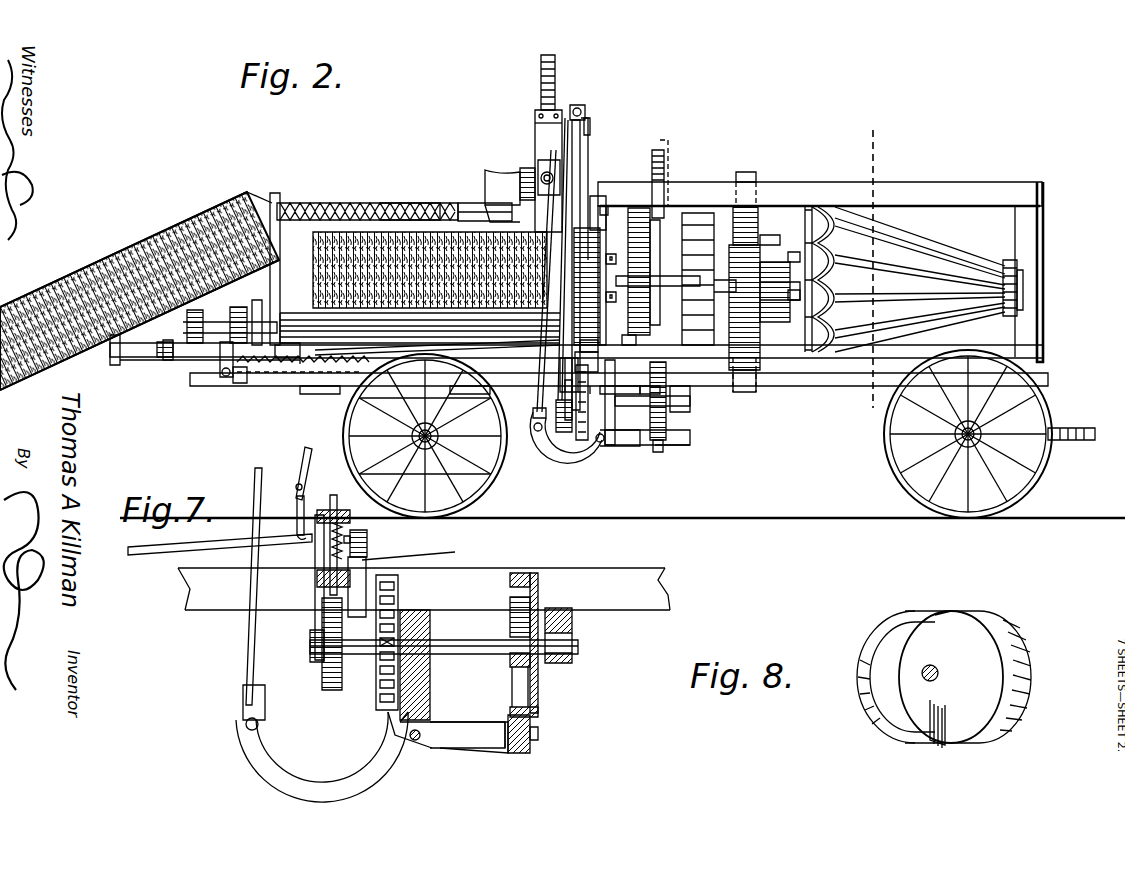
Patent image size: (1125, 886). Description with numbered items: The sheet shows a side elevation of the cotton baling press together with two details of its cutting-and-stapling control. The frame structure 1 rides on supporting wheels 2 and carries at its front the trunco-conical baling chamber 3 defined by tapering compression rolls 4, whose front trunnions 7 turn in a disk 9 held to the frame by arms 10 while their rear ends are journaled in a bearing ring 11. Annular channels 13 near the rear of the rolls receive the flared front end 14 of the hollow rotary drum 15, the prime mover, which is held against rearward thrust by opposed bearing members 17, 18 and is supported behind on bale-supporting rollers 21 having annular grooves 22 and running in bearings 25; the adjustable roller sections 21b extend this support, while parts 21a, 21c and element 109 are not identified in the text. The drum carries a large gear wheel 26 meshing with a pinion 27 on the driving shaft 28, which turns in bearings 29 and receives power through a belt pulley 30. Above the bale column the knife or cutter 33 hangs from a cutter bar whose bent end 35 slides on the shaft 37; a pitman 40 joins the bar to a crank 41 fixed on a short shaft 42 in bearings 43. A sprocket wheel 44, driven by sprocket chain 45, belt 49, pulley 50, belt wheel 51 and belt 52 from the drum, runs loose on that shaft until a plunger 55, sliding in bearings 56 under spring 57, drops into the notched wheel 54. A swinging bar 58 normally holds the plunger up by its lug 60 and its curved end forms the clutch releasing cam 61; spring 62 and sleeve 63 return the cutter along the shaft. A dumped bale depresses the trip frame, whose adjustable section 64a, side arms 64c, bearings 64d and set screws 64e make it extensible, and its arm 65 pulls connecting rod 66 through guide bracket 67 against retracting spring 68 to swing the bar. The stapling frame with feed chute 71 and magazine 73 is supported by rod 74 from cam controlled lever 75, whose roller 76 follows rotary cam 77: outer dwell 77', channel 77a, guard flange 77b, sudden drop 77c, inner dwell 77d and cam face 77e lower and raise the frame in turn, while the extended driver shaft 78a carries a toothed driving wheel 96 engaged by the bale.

In FIG. 2, the frame structure 1 is at (642, 302).
In FIG. 7, the frame structure 1 is at (424, 578).
In FIG. 2, the supporting wheels 2 is at (488, 478).
In FIG. 2, the baling chamber 3 is at (920, 252).
In FIG. 2, the compression rolls 4 is at (940, 256).
In FIG. 2, the front trunnions 7 is at (958, 328).
In FIG. 2, the disk 9 is at (1008, 260).
In FIG. 2, the arms 10 is at (1018, 312).
In FIG. 2, the bearing ring 11 is at (806, 238).
In FIG. 2, the annular channels 13 is at (828, 294).
In FIG. 2, the flared front end 14 is at (872, 270).
In FIG. 2, the hollow rotary drum 15 is at (773, 323).
In FIG. 2, the bearing member 17 is at (631, 346).
In FIG. 2, the bearing member 18 is at (636, 336).
In FIG. 2, the bale-supporting rollers 21 is at (305, 300).
In FIG. 2, the roller bearing 21a is at (263, 312).
In FIG. 2, the adjustable roller sections 21b is at (187, 318).
In FIG. 2, the roller pinion 21c is at (230, 322).
In FIG. 2, the annular grooves 22 is at (596, 275).
In FIG. 2, the bearings 25 is at (308, 312).
In FIG. 2, the gear wheel 26 is at (746, 172).
In FIG. 2, the pinion 27 is at (788, 245).
In FIG. 2, the driving shaft 28 is at (662, 280).
In FIG. 2, the bearings 29 is at (615, 266).
In FIG. 2, the belt pulley 30 is at (700, 212).
In FIG. 2, the knife or cutter 33 is at (568, 186).
In FIG. 2, the cutter bar end 35 is at (584, 158).
In FIG. 2, the shaft 37 is at (412, 205).
In FIG. 2, the pitman 40 is at (582, 136).
In FIG. 7, the pitman 40 is at (304, 452).
In FIG. 2, the crank 41 is at (558, 400).
In FIG. 7, the crank 41 is at (312, 594).
In FIG. 2, the short shaft 42 is at (630, 406).
In FIG. 7, the short shaft 42 is at (462, 648).
In FIG. 2, the bearings 43 is at (690, 396).
In FIG. 7, the bearings 43 is at (430, 692).
In FIG. 2, the sprocket wheel 44 is at (582, 440).
In FIG. 7, the sprocket wheel 44 is at (380, 690).
In FIG. 2, the sprocket chain 45 is at (596, 371).
In FIG. 2, the belt 49 is at (597, 198).
In FIG. 2, the pulley 50 is at (608, 208).
In FIG. 2, the belt wheel 51 is at (670, 158).
In FIG. 2, the belt 52 is at (660, 152).
In FIG. 2, the notched wheel 54 is at (562, 432).
In FIG. 7, the notched wheel 54 is at (326, 680).
In FIG. 2, the plunger 55 is at (599, 345).
In FIG. 7, the plunger 55 is at (333, 495).
In FIG. 7, the bearings 56 is at (346, 523).
In FIG. 7, the spring 57 is at (316, 548).
In FIG. 7, the swinging bar 58 is at (366, 562).
In FIG. 2, the lug or projection 60 is at (563, 375).
In FIG. 7, the lug or projection 60 is at (366, 545).
In FIG. 2, the clutch releasing cam 61 is at (620, 402).
In FIG. 7, the clutch releasing cam 61 is at (420, 555).
In FIG. 2, the spring 62 is at (352, 206).
In FIG. 2, the sleeve 63 is at (478, 200).
In FIG. 2, the adjustable frame section 64a is at (125, 350).
In FIG. 2, the side arms 64c is at (188, 362).
In FIG. 2, the bearings 64d is at (160, 356).
In FIG. 2, the set screws 64e is at (168, 360).
In FIG. 2, the arm 65 is at (220, 370).
In FIG. 2, the connecting rod 66 is at (486, 348).
In FIG. 7, the connecting rod 66 is at (210, 548).
In FIG. 2, the guide bracket 67 is at (340, 362).
In FIG. 2, the retracting spring 68 is at (240, 382).
In FIG. 2, the feed chute 71 is at (536, 130).
In FIG. 2, the stapling magazine 73 is at (552, 62).
In FIG. 2, the rod 74 is at (538, 374).
In FIG. 7, the rod 74 is at (258, 460).
In FIG. 2, the cam controlled lever 75 is at (556, 454).
In FIG. 7, the cam controlled lever 75 is at (340, 770).
In FIG. 2, the roller 76 is at (656, 452).
In FIG. 7, the roller 76 is at (512, 753).
In FIG. 2, the rotary cam 77 is at (671, 401).
In FIG. 7, the rotary cam 77 is at (482, 660).
In FIG. 8, the rotary cam 77 is at (951, 663).
In FIG. 7, the outer dwell 77' is at (534, 557).
In FIG. 8, the outer dwell 77' is at (1000, 674).
In FIG. 7, the channel 77a is at (512, 680).
In FIG. 8, the channel 77a is at (880, 700).
In FIG. 8, the guard flange 77b is at (862, 690).
In FIG. 8, the sudden drop 77c is at (944, 712).
In FIG. 8, the inner dwell 77d is at (905, 675).
In FIG. 8, the cam face 77e is at (938, 614).
In FIG. 2, the driver shaft 78a is at (528, 168).
In FIG. 2, the driving wheel 96 is at (512, 172).
In FIG. 2, the pin 109 is at (585, 113).